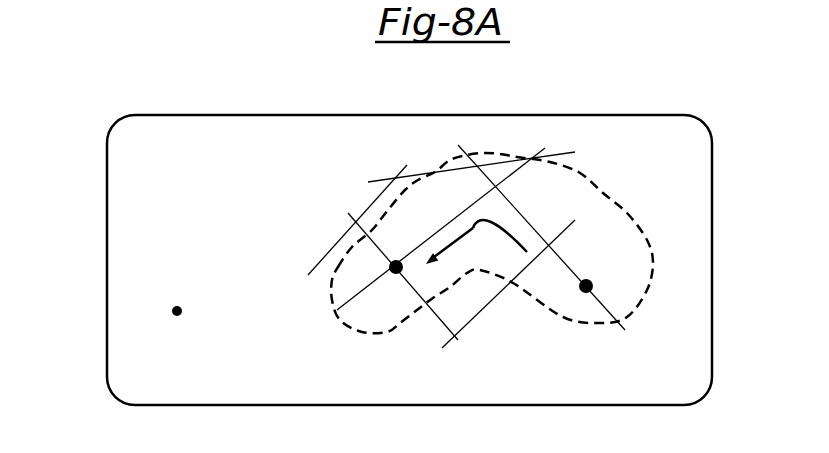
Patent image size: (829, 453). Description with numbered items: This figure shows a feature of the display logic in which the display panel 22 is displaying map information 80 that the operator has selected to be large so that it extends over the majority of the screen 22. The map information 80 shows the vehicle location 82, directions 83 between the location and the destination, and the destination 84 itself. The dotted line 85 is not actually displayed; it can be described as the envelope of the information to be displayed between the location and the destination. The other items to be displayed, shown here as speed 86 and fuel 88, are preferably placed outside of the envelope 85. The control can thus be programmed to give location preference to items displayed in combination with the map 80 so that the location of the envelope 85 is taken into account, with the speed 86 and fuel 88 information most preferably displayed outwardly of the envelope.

The display panel 22 is at (338, 132).
The map information 80 is at (590, 180).
The vehicle location 82 is at (592, 286).
The directions 83 is at (473, 228).
The destination 84 is at (396, 270).
The dotted line envelope 85 is at (613, 217).
The speed 86 is at (197, 165).
The fuel 88 is at (163, 277).